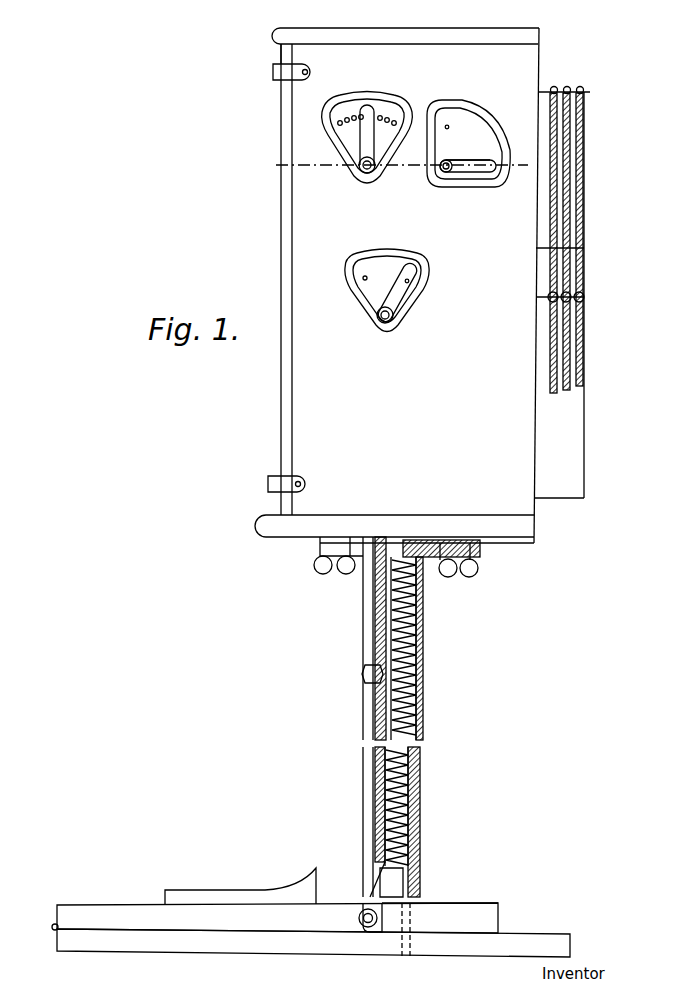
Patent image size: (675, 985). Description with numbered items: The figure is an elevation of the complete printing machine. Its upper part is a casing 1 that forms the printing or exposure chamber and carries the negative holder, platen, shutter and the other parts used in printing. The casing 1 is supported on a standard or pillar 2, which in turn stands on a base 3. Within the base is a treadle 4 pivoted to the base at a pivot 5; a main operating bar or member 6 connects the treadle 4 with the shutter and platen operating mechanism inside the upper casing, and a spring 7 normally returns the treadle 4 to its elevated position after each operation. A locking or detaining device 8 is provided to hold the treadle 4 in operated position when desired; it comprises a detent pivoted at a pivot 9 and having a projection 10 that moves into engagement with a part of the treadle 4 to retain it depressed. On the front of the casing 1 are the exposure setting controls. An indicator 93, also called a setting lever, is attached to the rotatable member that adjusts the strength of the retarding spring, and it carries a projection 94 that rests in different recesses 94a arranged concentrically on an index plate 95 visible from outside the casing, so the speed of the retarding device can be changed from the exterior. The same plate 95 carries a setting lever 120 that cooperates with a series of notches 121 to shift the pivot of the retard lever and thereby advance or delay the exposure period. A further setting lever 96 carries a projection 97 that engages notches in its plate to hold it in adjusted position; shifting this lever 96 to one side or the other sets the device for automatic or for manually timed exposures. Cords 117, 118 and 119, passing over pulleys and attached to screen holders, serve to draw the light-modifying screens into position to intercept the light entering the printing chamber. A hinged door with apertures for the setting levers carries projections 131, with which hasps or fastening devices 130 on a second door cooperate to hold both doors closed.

The casing 1 is at (422, 302).
The standard or pillar 2 is at (413, 700).
The base 3 is at (441, 948).
The treadle 4 is at (125, 915).
The pivot 5 is at (52, 925).
The main operating bar or member 6 is at (373, 615).
The spring 7 is at (420, 762).
The locking or detaining device 8 is at (427, 913).
The pivot of detent 9 is at (418, 889).
The projection 10 is at (368, 905).
The indicator 93 is at (475, 160).
The projection 94 is at (483, 168).
The recesses 94a is at (449, 125).
The index plate 95 is at (468, 143).
The setting lever 96 is at (397, 297).
The projection 97 is at (407, 281).
The cord 117 is at (556, 120).
The cord 118 is at (568, 152).
The cord 119 is at (580, 175).
The setting lever 120 is at (368, 145).
The notches 121 is at (374, 115).
The hasps or fastening devices 130 is at (276, 78).
The projections 131 is at (310, 73).